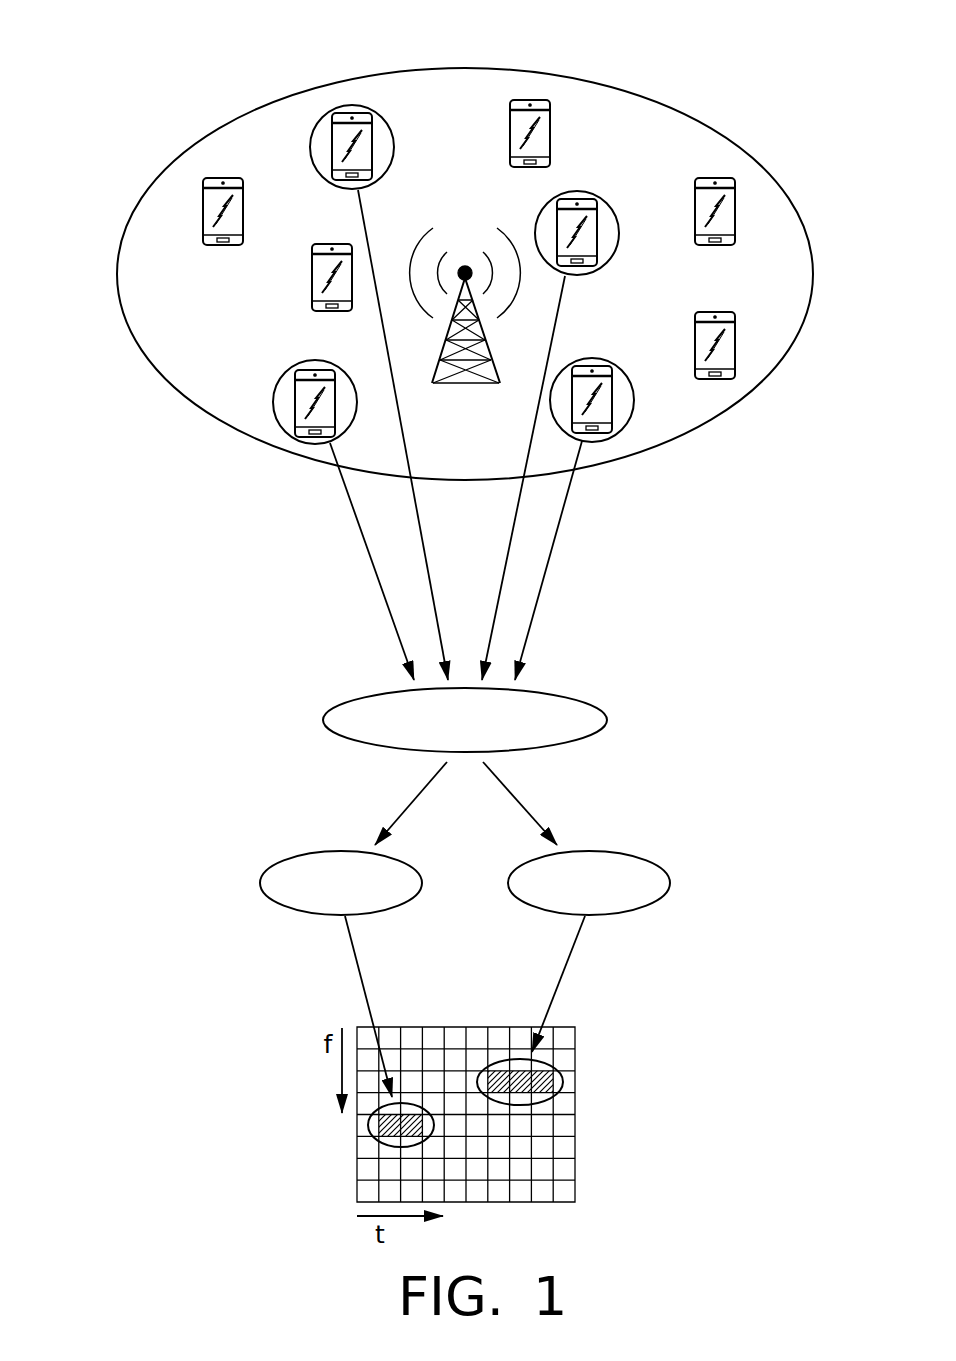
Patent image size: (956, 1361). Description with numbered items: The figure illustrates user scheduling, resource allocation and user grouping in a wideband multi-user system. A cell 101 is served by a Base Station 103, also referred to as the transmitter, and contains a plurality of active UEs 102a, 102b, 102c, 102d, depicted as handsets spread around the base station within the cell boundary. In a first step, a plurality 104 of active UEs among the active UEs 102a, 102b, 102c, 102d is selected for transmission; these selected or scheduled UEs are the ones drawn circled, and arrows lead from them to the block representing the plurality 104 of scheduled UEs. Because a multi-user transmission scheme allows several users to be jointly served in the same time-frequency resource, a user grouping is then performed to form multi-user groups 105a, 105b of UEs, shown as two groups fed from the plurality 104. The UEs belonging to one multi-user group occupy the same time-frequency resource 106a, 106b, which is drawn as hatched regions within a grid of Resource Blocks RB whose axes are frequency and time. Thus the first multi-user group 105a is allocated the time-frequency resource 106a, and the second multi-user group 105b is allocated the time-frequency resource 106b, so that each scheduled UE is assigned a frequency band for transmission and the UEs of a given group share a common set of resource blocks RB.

The cell 101 is at (688, 117).
The active UE 102a is at (201, 200).
The active UE 102b is at (344, 114).
The active UE 102c is at (529, 100).
The active UE 102d is at (278, 423).
The base station 103 is at (445, 378).
The plurality of scheduled UEs 104 is at (607, 718).
The multi-user group 105a is at (260, 881).
The multi-user group 105b is at (670, 881).
The time-frequency resource 106a is at (372, 1138).
The time-frequency resource 106b is at (557, 1071).
The resource block RB is at (565, 1035).